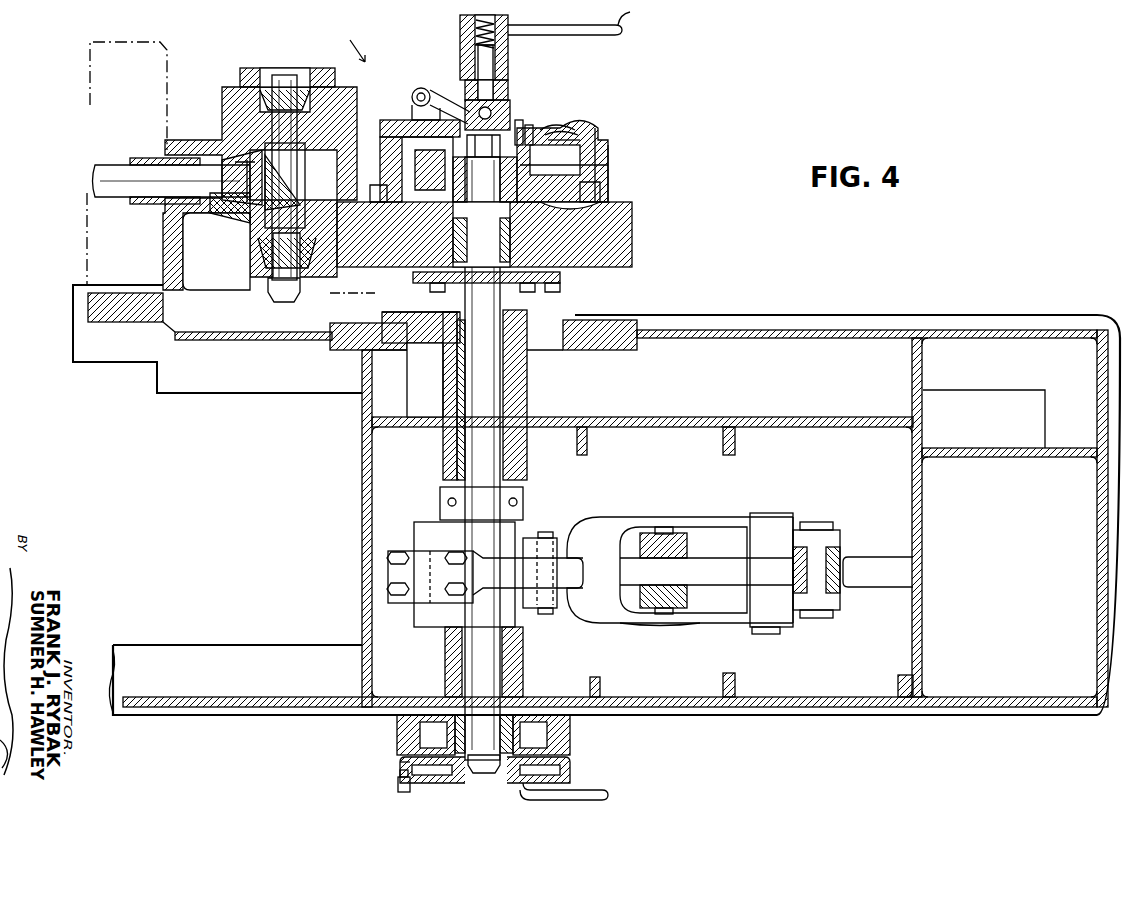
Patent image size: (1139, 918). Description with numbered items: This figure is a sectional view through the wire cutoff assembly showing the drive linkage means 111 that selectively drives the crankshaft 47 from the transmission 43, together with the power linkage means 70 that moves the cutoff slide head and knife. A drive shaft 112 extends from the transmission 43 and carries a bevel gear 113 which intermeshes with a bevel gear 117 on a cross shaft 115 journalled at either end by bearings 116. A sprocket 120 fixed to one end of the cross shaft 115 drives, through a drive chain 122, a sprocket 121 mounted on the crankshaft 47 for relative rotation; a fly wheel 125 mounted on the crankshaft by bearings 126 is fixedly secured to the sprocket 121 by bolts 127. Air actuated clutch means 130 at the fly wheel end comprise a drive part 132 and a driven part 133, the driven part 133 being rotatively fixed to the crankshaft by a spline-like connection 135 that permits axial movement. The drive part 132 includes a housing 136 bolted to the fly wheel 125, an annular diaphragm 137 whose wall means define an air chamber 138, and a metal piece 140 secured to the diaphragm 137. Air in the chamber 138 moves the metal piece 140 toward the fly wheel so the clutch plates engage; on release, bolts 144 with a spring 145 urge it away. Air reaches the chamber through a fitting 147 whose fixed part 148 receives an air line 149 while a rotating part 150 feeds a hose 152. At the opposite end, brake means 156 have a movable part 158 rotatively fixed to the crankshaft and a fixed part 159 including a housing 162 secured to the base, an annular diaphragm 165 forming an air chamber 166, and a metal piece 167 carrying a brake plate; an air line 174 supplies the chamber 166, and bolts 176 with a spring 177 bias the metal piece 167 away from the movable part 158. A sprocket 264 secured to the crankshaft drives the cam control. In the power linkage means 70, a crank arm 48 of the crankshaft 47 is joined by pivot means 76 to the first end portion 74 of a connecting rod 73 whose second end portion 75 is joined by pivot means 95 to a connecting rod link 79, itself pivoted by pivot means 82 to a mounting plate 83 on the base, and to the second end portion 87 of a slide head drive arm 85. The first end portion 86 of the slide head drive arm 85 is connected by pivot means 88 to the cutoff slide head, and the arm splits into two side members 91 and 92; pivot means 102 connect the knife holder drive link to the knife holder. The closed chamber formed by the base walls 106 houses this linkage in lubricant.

The transmission 43 is at (88, 105).
The crankshaft 47 is at (497, 490).
The crank arm 48 is at (422, 528).
The power linkage means 70 is at (787, 462).
The connecting rod 73 is at (722, 580).
The first end portion 74 is at (482, 578).
The second end portion 75 is at (797, 617).
The pivot means 76 is at (553, 614).
The connecting rod link 79 is at (800, 535).
The pivot means 82 is at (820, 525).
The mounting plate 83 is at (880, 580).
The slide head drive arm 85 is at (632, 520).
The first end portion 86 is at (558, 550).
The second end portion 87 is at (740, 518).
The pivot means 88 is at (545, 531).
The side member 91 is at (688, 520).
The side member 92 is at (690, 623).
The pivot means 95 is at (762, 634).
The pivot means 102 is at (672, 530).
The housing 106 is at (913, 477).
The drive linkage means 111 is at (355, 41).
The drive shaft 112 is at (120, 185).
The bevel gear 113 is at (240, 232).
The cross shaft 115 is at (303, 178).
The bearings 116 is at (240, 70).
The bevel gear 117 is at (228, 120).
The sprocket 120 is at (268, 288).
The sprocket 121 is at (560, 279).
The drive chain 122 is at (372, 295).
The fly wheel 125 is at (630, 229).
The bearings 126 is at (510, 268).
The bolts 127 is at (540, 293).
The air actuated clutch means 130 is at (545, 115).
The drive part 132 is at (600, 135).
The driven part 133 is at (602, 165).
The spline-like connection 135 is at (600, 202).
The housing 136 is at (605, 150).
The annular diaphragm 137 is at (572, 118).
The air chamber 138 is at (555, 117).
The metal piece 140 is at (602, 145).
The bolts 144 is at (519, 118).
The spring 145 is at (532, 125).
The fitting 147 is at (460, 22).
The fixed part 148 is at (476, 46).
The air line 149 is at (620, 12).
The rotating part 150 is at (470, 95).
The hose 152 is at (412, 93).
The brake means 156 is at (397, 737).
The movable part 158 is at (572, 740).
The fixed part 159 is at (572, 724).
The housing 162 is at (572, 750).
The annular diaphragm 165 is at (398, 790).
The air chamber 166 is at (435, 776).
The metal piece 167 is at (568, 772).
The air line 174 is at (610, 796).
The bolts 176 is at (400, 785).
The spring 177 is at (403, 772).
The sprocket 264 is at (445, 303).